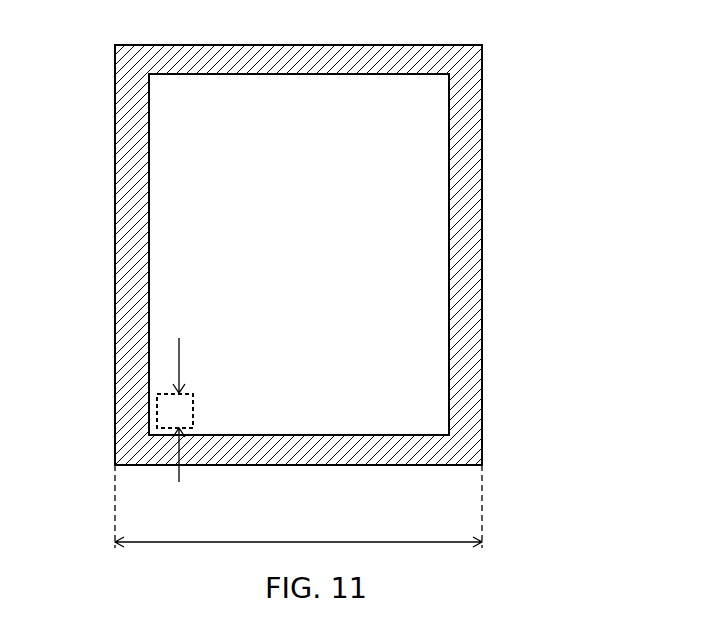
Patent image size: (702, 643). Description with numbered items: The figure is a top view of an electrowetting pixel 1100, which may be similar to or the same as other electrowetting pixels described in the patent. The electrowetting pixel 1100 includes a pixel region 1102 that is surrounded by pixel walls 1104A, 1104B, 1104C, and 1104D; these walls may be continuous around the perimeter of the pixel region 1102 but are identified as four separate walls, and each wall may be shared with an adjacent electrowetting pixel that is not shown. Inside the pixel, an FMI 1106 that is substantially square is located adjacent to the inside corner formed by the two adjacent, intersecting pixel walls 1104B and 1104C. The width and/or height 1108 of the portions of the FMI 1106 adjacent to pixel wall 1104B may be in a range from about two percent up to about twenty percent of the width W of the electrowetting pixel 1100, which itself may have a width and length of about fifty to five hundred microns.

The electrowetting pixel 1100 is at (351, 275).
The pixel region 1102 is at (323, 212).
The pixel wall 1104A is at (351, 296).
The pixel wall 1104B is at (351, 296).
The pixel wall 1104C is at (351, 255).
The pixel wall 1104D is at (115, 82).
The FMI 1106 is at (197, 413).
The width and/or height of portions of FMI 1108 is at (183, 399).